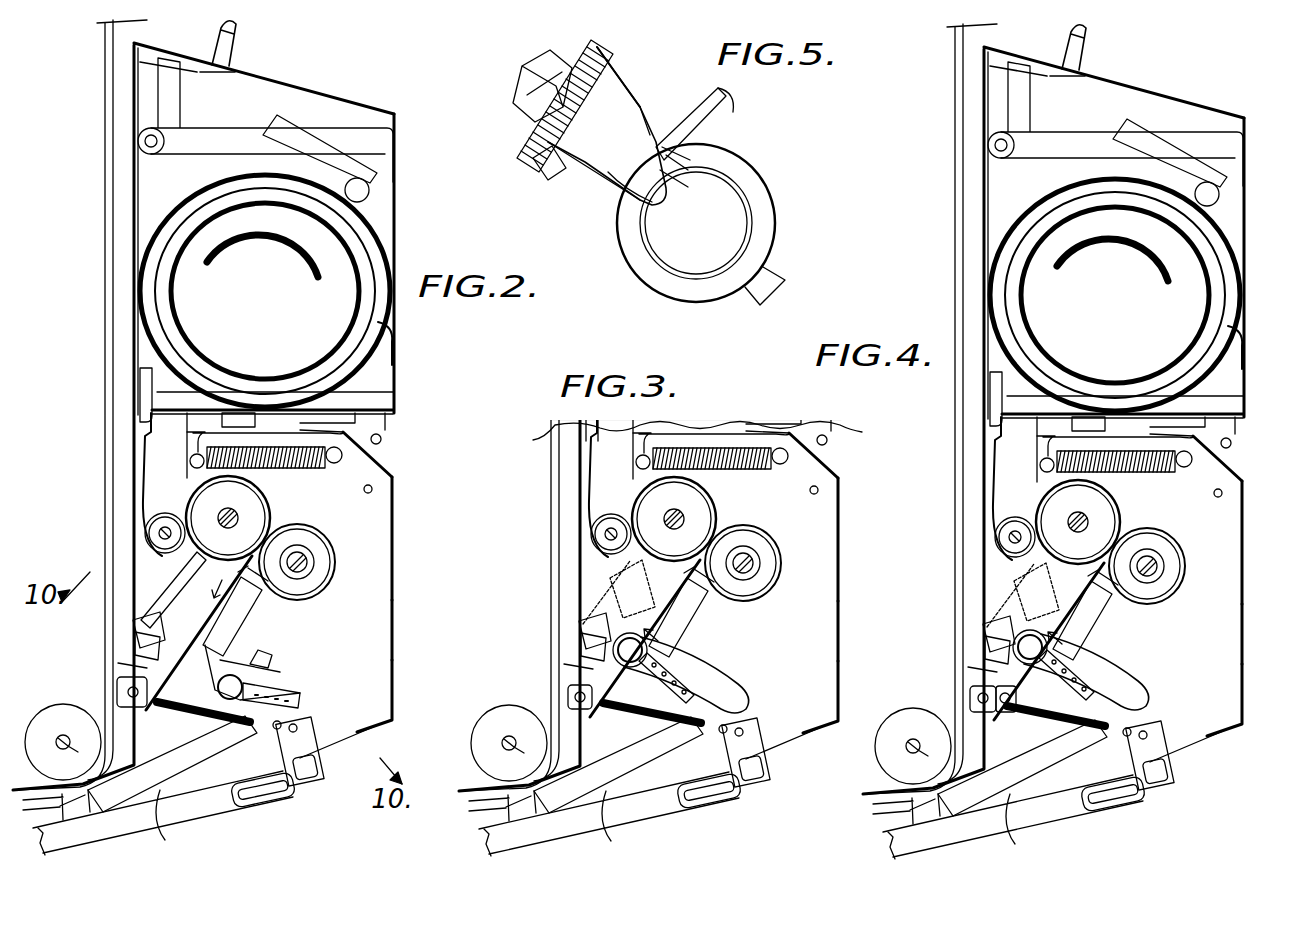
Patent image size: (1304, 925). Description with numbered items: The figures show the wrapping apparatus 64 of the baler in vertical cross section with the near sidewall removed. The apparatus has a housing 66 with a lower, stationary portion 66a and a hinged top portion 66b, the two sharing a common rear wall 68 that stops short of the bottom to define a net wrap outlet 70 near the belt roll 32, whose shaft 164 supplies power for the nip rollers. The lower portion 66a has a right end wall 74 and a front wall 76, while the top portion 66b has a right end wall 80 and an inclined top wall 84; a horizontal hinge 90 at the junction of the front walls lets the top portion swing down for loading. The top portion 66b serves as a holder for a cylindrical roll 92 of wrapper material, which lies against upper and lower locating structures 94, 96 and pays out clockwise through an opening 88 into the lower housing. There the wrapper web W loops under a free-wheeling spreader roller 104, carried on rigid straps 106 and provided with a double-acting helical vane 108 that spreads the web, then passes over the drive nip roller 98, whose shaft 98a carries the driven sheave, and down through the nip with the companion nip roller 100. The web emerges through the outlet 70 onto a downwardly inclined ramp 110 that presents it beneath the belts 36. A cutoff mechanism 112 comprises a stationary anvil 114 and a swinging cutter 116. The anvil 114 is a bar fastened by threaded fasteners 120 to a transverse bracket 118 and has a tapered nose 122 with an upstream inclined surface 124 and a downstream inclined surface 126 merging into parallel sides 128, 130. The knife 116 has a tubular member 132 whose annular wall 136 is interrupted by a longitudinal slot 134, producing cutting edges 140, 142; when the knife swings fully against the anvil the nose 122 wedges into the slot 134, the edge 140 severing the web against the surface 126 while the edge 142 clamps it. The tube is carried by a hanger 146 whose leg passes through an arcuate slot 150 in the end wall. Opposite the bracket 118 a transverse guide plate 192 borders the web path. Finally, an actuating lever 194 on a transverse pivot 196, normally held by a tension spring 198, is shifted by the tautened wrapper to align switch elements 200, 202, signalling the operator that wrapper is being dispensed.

In FIG. 2, the belt roll 32 is at (36, 730).
In FIG. 3, the belt roll 32 is at (482, 733).
In FIG. 4, the belt roll 32 is at (884, 738).
In FIG. 2, the belts 36 is at (112, 340).
In FIG. 3, the belts 36 is at (555, 489).
In FIG. 4, the belts 36 is at (960, 233).
In FIG. 2, the wrapping apparatus 64 is at (368, 78).
In FIG. 3, the wrapping apparatus 64 is at (722, 416).
In FIG. 4, the wrapping apparatus 64 is at (1208, 96).
In FIG. 2, the housing 66 is at (397, 406).
In FIG. 3, the housing 66 is at (842, 458).
In FIG. 4, the housing 66 is at (1246, 380).
In FIG. 2, the lower stationary housing portion 66a is at (395, 552).
In FIG. 3, the lower stationary housing portion 66a is at (840, 624).
In FIG. 4, the lower stationary housing portion 66a is at (1244, 573).
In FIG. 2, the hinged top housing portion 66b is at (396, 254).
In FIG. 4, the hinged top housing portion 66b is at (1246, 288).
In FIG. 2, the common rear wall 68 is at (128, 182).
In FIG. 4, the common rear wall 68 is at (978, 190).
In FIG. 2, the net wrap outlet 70 is at (146, 740).
In FIG. 3, the net wrap outlet 70 is at (592, 748).
In FIG. 4, the net wrap outlet 70 is at (990, 745).
In FIG. 2, the right end wall 74 is at (393, 635).
In FIG. 3, the right end wall 74 is at (835, 680).
In FIG. 4, the right end wall 74 is at (1240, 718).
In FIG. 2, the front wall 76 is at (395, 572).
In FIG. 3, the front wall 76 is at (840, 567).
In FIG. 4, the front wall 76 is at (1246, 660).
In FIG. 2, the right end wall 80 is at (385, 216).
In FIG. 4, the right end wall 80 is at (1238, 208).
In FIG. 2, the inclined top wall 84 is at (290, 80).
In FIG. 4, the inclined top wall 84 is at (1092, 74).
In FIG. 2, the opening 88 is at (138, 403).
In FIG. 3, the opening 88 is at (580, 415).
In FIG. 4, the opening 88 is at (985, 407).
In FIG. 2, the horizontal hinge 90 is at (373, 490).
In FIG. 3, the horizontal hinge 90 is at (818, 490).
In FIG. 4, the horizontal hinge 90 is at (1225, 493).
In FIG. 2, the roll of wrapper material 92 is at (136, 275).
In FIG. 4, the roll of wrapper material 92 is at (985, 280).
In FIG. 2, the upper locating structure 94 is at (360, 173).
In FIG. 4, the upper locating structure 94 is at (1212, 178).
In FIG. 2, the lower locating structure 96 is at (393, 350).
In FIG. 4, the lower locating structure 96 is at (1240, 345).
In FIG. 2, the nip roller 98 is at (262, 520).
In FIG. 3, the nip roller 98 is at (707, 522).
In FIG. 4, the nip roller 98 is at (1112, 523).
In FIG. 2, the shaft 98a is at (234, 512).
In FIG. 3, the shaft 98a is at (680, 514).
In FIG. 4, the shaft 98a is at (1083, 516).
In FIG. 2, the nip roller 100 is at (313, 548).
In FIG. 3, the nip roller 100 is at (758, 548).
In FIG. 4, the nip roller 100 is at (1163, 551).
In FIG. 2, the spreader roller 104 is at (160, 545).
In FIG. 3, the spreader roller 104 is at (600, 547).
In FIG. 4, the spreader roller 104 is at (1010, 549).
In FIG. 2, the rigid straps 106 is at (160, 468).
In FIG. 3, the rigid straps 106 is at (605, 466).
In FIG. 4, the rigid straps 106 is at (1010, 470).
In FIG. 2, the double-acting helical vane 108 is at (150, 518).
In FIG. 3, the double-acting helical vane 108 is at (590, 518).
In FIG. 4, the double-acting helical vane 108 is at (1000, 522).
In FIG. 2, the ramp 110 is at (160, 790).
In FIG. 3, the ramp 110 is at (600, 790).
In FIG. 4, the ramp 110 is at (1010, 790).
In FIG. 2, the cutoff mechanism 112 is at (302, 677).
In FIG. 3, the cutoff mechanism 112 is at (717, 679).
In FIG. 4, the cutoff mechanism 112 is at (1122, 675).
In FIG. 2, the anvil 114 is at (160, 632).
In FIG. 5, the anvil 114 is at (624, 96).
In FIG. 3, the anvil 114 is at (600, 610).
In FIG. 4, the anvil 114 is at (1005, 610).
In FIG. 2, the cutter (knife) 116 is at (248, 640).
In FIG. 5, the cutter (knife) 116 is at (772, 169).
In FIG. 3, the cutter (knife) 116 is at (690, 648).
In FIG. 4, the cutter (knife) 116 is at (1090, 648).
In FIG. 2, the transverse bracket 118 is at (178, 576).
In FIG. 5, the transverse bracket 118 is at (525, 150).
In FIG. 3, the transverse bracket 118 is at (625, 577).
In FIG. 4, the transverse bracket 118 is at (1028, 578).
In FIG. 5, the threaded fasteners 120 is at (535, 80).
In FIG. 5, the tapered nose 122 is at (640, 165).
In FIG. 5, the upstream inclined surface 124 is at (716, 92).
In FIG. 5, the downstream inclined surface 126 is at (600, 185).
In FIG. 5, the parallel side 128 is at (645, 100).
In FIG. 5, the parallel side 130 is at (560, 172).
In FIG. 2, the tubular member (knife tube) 132 is at (268, 667).
In FIG. 5, the tubular member (knife tube) 132 is at (652, 292).
In FIG. 2, the longitudinal slot 134 is at (218, 688).
In FIG. 5, the longitudinal slot 134 is at (672, 180).
In FIG. 3, the longitudinal slot 134 is at (630, 650).
In FIG. 4, the longitudinal slot 134 is at (1030, 647).
In FIG. 5, the annular wall 136 is at (767, 230).
In FIG. 5, the cutting edge 140 is at (615, 198).
In FIG. 5, the cutting edge 142 is at (690, 152).
In FIG. 2, the right hanger 146 is at (305, 697).
In FIG. 3, the right hanger 146 is at (700, 694).
In FIG. 4, the right hanger 146 is at (1090, 692).
In FIG. 2, the arcuate slot 150 is at (312, 740).
In FIG. 3, the arcuate slot 150 is at (765, 738).
In FIG. 4, the arcuate slot 150 is at (1165, 740).
In FIG. 2, the shaft 164 is at (60, 749).
In FIG. 3, the shaft 164 is at (460, 750).
In FIG. 4, the shaft 164 is at (914, 750).
In FIG. 2, the transverse guide plate 192 is at (265, 600).
In FIG. 3, the transverse guide plate 192 is at (710, 604).
In FIG. 4, the transverse guide plate 192 is at (1115, 606).
In FIG. 2, the actuating lever 194 is at (143, 668).
In FIG. 3, the actuating lever 194 is at (590, 672).
In FIG. 4, the actuating lever 194 is at (995, 660).
In FIG. 2, the transverse pivot 196 is at (137, 645).
In FIG. 3, the transverse pivot 196 is at (585, 650).
In FIG. 4, the transverse pivot 196 is at (985, 640).
In FIG. 2, the tension spring 198 is at (222, 778).
In FIG. 3, the tension spring 198 is at (667, 780).
In FIG. 4, the tension spring 198 is at (1072, 780).
In FIG. 2, the switch element 200 is at (128, 692).
In FIG. 3, the switch element 200 is at (578, 695).
In FIG. 4, the switch element 200 is at (982, 690).
In FIG. 4, the switch element 202 is at (998, 697).
In FIG. 2, the wrapper web W is at (223, 578).
In FIG. 5, the wrapper web W is at (740, 100).
In FIG. 3, the wrapper web W is at (656, 625).
In FIG. 4, the wrapper web W is at (1060, 622).